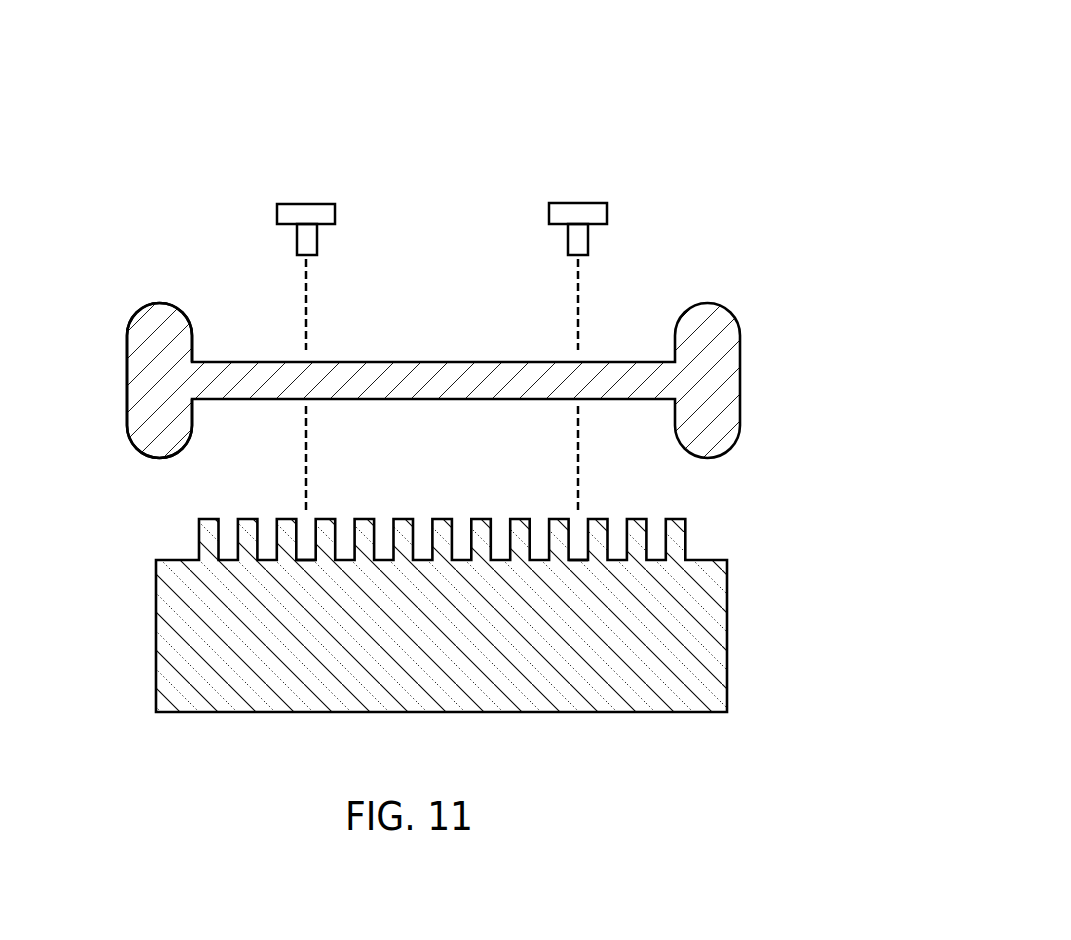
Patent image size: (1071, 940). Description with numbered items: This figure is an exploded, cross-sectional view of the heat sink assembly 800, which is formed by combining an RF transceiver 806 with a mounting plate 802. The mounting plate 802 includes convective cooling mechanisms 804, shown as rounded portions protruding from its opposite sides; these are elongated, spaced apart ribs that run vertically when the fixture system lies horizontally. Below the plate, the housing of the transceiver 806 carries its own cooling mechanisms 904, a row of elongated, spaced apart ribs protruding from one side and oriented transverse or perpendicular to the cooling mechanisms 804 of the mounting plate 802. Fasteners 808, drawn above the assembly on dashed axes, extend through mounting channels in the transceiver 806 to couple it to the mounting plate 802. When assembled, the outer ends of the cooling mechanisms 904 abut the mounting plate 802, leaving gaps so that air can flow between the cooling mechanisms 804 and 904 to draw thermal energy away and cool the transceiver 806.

The assembly 800 is at (783, 84).
The mounting plate 802 is at (386, 371).
The convective cooling mechanisms 804 is at (126, 382).
The RF transceiver 806 is at (728, 630).
The fasteners 808 is at (305, 200).
The cooling mechanisms 904 is at (567, 568).